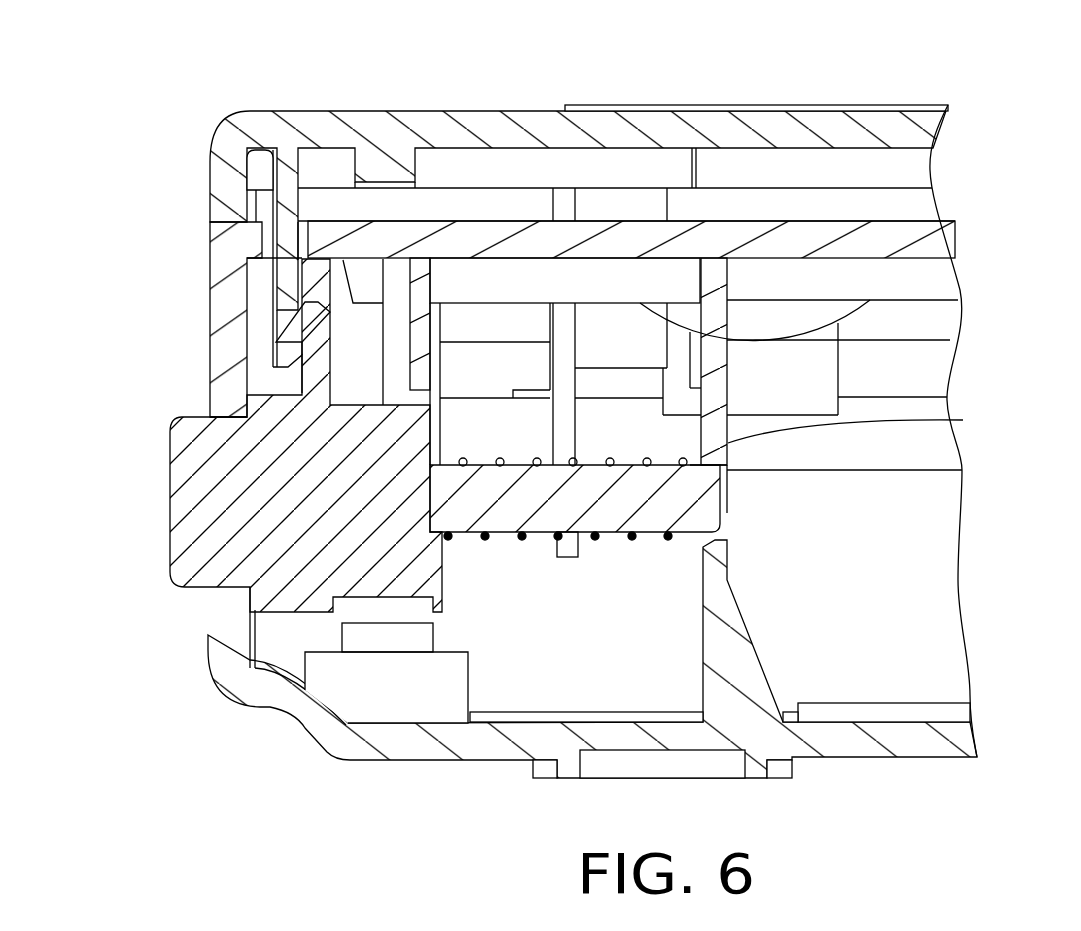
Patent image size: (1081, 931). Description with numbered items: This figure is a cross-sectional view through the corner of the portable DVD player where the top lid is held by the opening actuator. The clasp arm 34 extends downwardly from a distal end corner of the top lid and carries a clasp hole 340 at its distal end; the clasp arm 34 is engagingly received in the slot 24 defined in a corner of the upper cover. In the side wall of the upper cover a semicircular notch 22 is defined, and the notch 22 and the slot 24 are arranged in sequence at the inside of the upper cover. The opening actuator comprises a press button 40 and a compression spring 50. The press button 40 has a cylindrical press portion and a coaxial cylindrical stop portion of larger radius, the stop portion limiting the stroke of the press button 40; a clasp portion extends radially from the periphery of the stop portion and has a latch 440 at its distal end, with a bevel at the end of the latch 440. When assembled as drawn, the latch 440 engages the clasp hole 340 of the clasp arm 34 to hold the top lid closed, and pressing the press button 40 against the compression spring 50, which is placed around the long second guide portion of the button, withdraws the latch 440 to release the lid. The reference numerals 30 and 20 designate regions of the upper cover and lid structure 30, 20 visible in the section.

The cover 30 is at (320, 128).
The clasp arm 34 is at (288, 180).
The slot 24 is at (262, 213).
The clasp hole 340 is at (289, 283).
The latch 440 is at (285, 325).
The frame 20 is at (235, 358).
The semicircular notch 22 is at (212, 413).
The press button 40 is at (220, 512).
The compression spring 50 is at (690, 462).